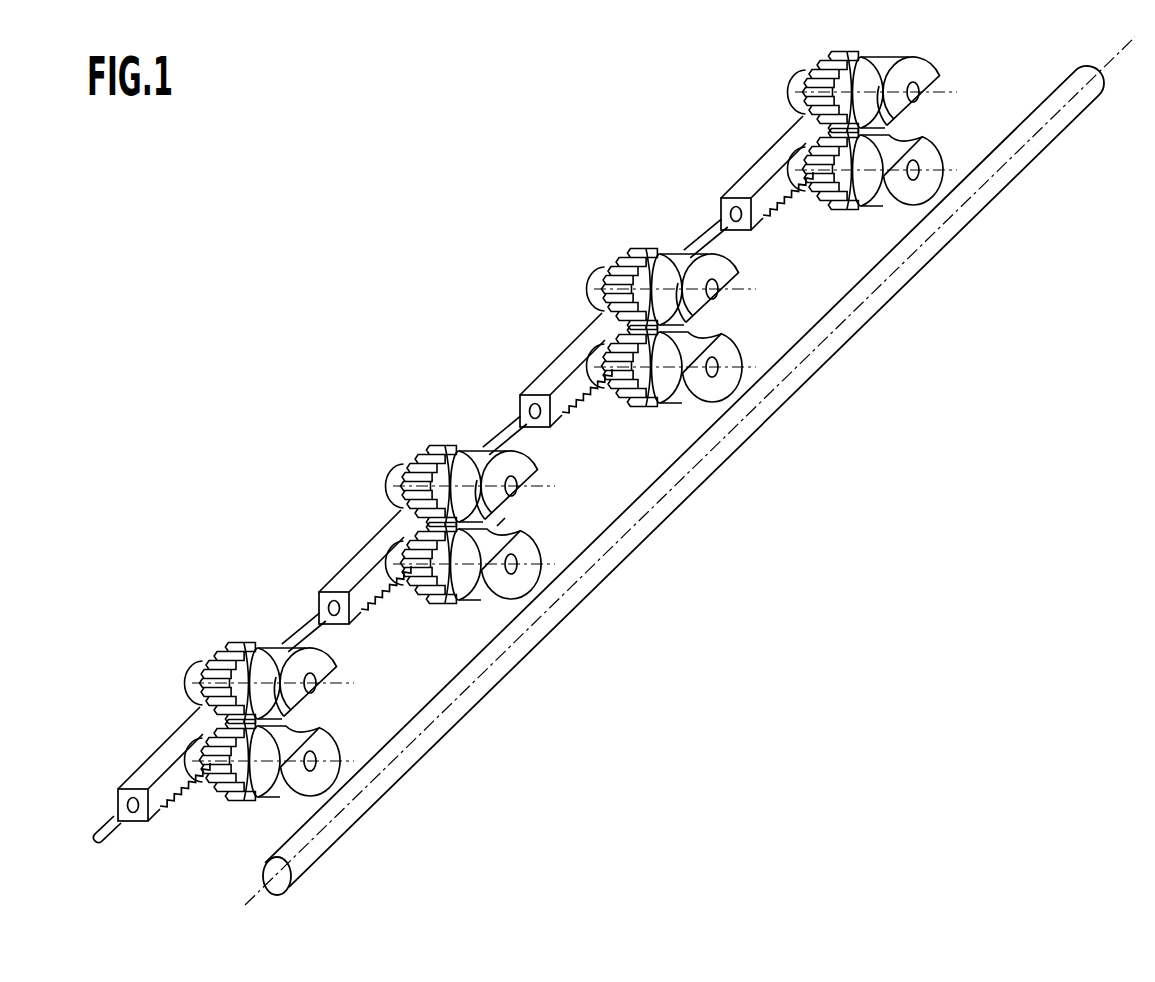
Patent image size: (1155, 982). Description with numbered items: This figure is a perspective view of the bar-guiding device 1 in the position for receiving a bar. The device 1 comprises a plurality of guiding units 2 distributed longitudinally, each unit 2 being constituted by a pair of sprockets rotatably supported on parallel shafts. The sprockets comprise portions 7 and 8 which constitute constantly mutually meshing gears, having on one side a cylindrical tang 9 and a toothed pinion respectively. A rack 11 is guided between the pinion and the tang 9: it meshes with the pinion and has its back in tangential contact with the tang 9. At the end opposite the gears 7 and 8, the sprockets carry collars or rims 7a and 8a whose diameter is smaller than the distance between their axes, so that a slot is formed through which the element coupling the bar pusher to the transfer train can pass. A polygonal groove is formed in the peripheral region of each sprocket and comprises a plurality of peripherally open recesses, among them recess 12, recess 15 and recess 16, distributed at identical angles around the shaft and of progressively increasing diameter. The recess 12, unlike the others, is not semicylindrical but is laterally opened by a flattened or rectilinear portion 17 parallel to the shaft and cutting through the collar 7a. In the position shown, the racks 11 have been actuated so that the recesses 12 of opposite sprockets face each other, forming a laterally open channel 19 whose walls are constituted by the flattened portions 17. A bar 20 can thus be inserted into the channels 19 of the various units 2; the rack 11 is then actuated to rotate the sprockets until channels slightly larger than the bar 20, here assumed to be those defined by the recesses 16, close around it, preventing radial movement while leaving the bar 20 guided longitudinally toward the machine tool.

The device 1 is at (599, 471).
The guiding unit 2 is at (411, 353).
The gear portion 7 is at (429, 445).
The collar 7a is at (505, 475).
The gear portion 8 is at (424, 599).
The collar 8a is at (520, 609).
The cylindrical tang 9 is at (371, 455).
The rack 11 is at (237, 674).
The recess 12 is at (695, 345).
The recess 15 is at (693, 216).
The recess 16 is at (585, 294).
The flattened portion 17 is at (893, 140).
The laterally open channel 19 is at (549, 502).
The bar 20 is at (735, 436).